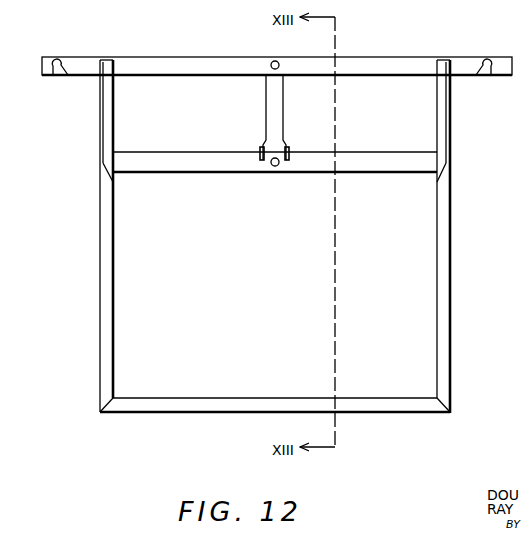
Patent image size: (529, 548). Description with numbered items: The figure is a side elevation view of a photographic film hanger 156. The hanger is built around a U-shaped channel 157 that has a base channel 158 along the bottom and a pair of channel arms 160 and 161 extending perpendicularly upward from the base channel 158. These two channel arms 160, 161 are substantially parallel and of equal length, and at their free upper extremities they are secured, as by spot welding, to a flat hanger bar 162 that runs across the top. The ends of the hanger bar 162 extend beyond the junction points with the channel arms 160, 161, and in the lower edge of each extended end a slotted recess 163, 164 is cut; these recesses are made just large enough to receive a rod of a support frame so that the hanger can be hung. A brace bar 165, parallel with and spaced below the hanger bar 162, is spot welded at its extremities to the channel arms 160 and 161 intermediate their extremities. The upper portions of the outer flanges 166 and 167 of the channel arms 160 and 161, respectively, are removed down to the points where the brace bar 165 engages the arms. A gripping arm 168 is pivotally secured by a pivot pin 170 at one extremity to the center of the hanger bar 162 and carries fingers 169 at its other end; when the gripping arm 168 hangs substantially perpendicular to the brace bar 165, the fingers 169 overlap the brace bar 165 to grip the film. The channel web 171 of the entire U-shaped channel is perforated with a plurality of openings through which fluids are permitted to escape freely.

The photographic film hanger 156 is at (273, 239).
The U-shaped channel 157 is at (158, 414).
The base channel 158 is at (211, 405).
The channel arm 160 is at (453, 304).
The channel arm 161 is at (98, 298).
The hanger bar 162 is at (368, 66).
The slotted recess 163 is at (486, 78).
The slotted recess 164 is at (62, 78).
The brace bar 165 is at (400, 165).
The outer flange 166 is at (444, 218).
The outer flange 167 is at (108, 212).
The gripping arm 168 is at (276, 100).
The fingers 169 is at (284, 163).
The pivot pin 170 is at (272, 62).
The channel web 171 is at (452, 141).